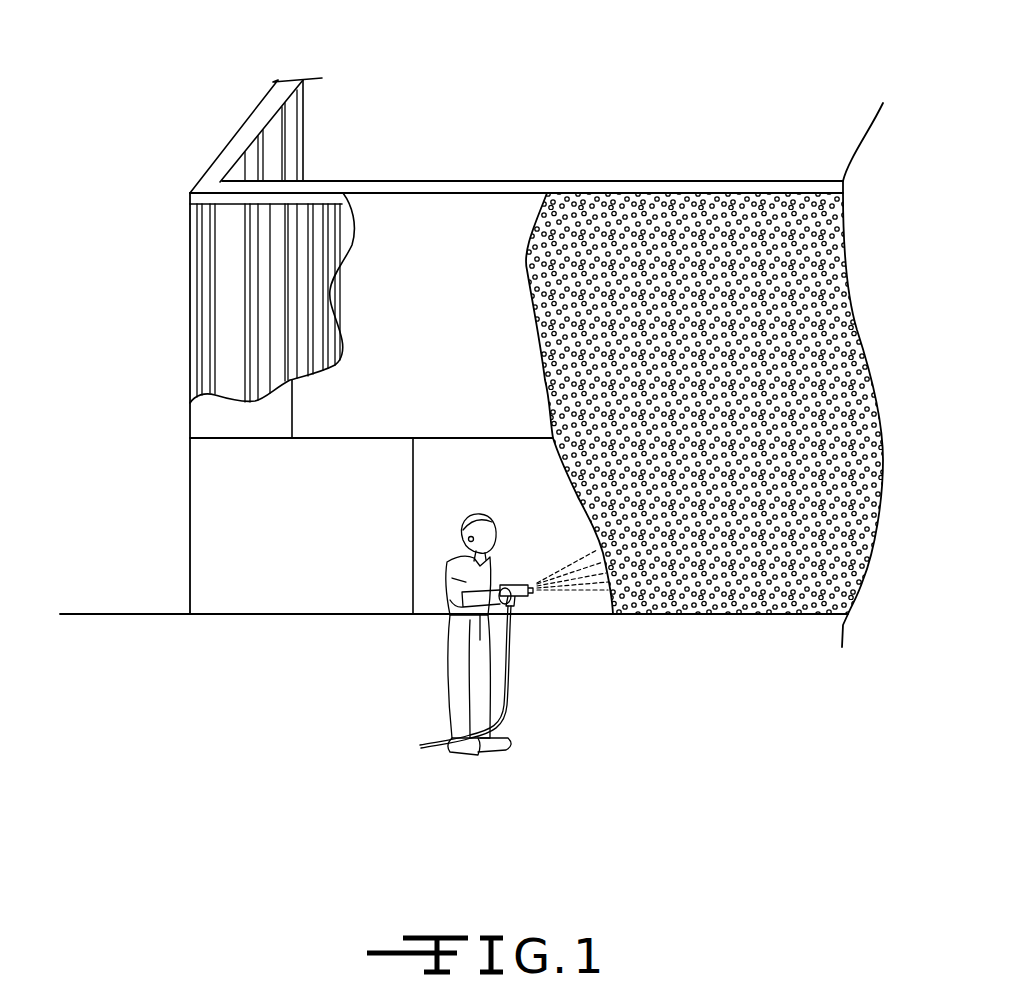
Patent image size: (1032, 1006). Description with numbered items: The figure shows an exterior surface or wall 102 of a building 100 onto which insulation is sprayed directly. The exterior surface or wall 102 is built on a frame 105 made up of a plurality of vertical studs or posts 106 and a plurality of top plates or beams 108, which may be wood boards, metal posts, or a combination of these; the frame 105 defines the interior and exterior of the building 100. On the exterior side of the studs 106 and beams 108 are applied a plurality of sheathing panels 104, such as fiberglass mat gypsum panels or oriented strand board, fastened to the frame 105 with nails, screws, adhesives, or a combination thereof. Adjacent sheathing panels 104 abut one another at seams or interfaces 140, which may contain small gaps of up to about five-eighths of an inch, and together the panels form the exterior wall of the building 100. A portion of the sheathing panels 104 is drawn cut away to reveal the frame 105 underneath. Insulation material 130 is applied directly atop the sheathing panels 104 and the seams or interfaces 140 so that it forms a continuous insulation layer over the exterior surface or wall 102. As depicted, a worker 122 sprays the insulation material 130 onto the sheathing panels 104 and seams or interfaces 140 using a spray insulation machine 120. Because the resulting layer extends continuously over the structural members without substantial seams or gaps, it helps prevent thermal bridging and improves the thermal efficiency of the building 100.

The building 100 is at (821, 124).
The exterior surface or wall 102 is at (268, 602).
The sheathing panels 104 is at (453, 225).
The frame 105 is at (157, 302).
The vertical studs or posts 106 is at (292, 121).
The top plates or beams 108 is at (238, 150).
The spray insulation machine 120 is at (540, 590).
The worker 122 is at (453, 650).
The insulation material 130 is at (708, 212).
The seams or interfaces 140 is at (216, 437).